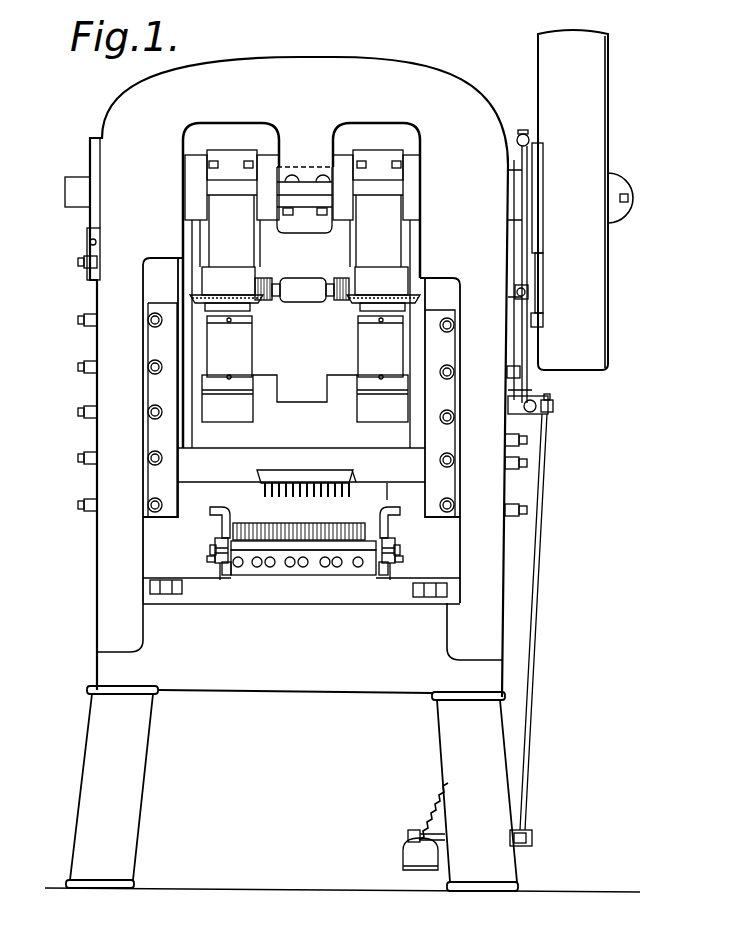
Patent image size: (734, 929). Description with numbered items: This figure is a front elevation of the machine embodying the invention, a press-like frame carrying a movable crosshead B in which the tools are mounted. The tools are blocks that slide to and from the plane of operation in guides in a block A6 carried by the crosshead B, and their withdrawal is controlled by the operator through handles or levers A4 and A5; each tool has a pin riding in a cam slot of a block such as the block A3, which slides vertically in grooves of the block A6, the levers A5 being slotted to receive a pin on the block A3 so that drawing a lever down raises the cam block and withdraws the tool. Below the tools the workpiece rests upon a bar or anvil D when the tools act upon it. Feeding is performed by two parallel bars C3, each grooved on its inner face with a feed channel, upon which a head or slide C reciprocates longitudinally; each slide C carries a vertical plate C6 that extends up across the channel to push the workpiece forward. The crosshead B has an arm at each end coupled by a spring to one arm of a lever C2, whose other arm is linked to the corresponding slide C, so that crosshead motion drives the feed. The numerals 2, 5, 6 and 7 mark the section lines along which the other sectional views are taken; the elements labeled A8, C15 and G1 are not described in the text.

The movable crosshead B is at (327, 418).
The cam slotted block A3 is at (273, 580).
The operating lever A4 is at (262, 486).
The operating lever A5 is at (243, 578).
The tool guide block A6 is at (387, 497).
The punch row A8 is at (268, 478).
The feeding block or slide C is at (217, 545).
The lever C2 is at (212, 514).
The bar C3 is at (213, 556).
The vertical plate C6 is at (225, 565).
The clamping bar C15 is at (312, 574).
The bar or anvil D is at (332, 566).
The spring hook G1 is at (216, 514).
The section line 2- 2 is at (297, 600).
The section line 5- 5 is at (207, 590).
The section line 6- 6 is at (470, 548).
The section line 7- 7 is at (470, 484).